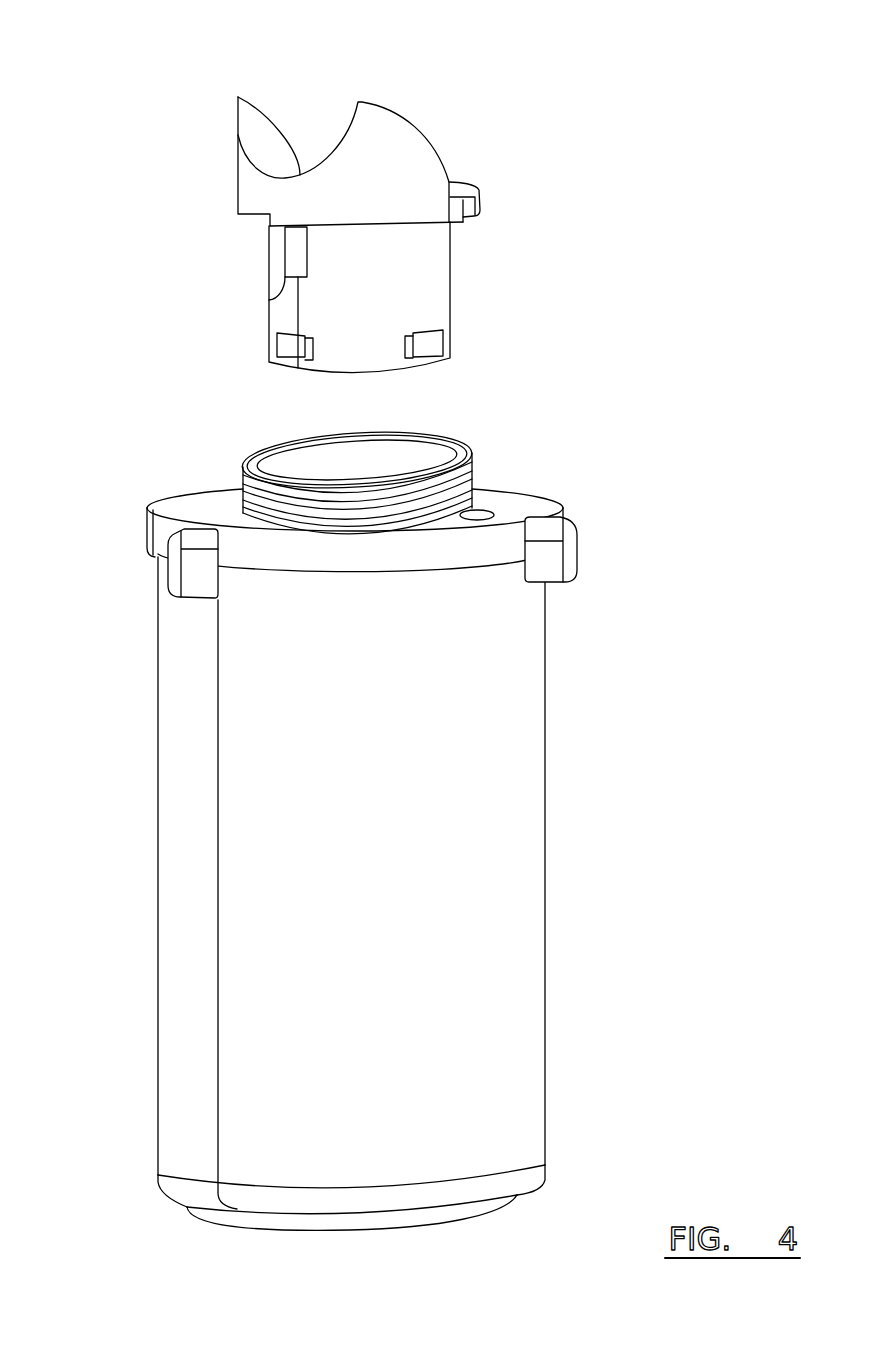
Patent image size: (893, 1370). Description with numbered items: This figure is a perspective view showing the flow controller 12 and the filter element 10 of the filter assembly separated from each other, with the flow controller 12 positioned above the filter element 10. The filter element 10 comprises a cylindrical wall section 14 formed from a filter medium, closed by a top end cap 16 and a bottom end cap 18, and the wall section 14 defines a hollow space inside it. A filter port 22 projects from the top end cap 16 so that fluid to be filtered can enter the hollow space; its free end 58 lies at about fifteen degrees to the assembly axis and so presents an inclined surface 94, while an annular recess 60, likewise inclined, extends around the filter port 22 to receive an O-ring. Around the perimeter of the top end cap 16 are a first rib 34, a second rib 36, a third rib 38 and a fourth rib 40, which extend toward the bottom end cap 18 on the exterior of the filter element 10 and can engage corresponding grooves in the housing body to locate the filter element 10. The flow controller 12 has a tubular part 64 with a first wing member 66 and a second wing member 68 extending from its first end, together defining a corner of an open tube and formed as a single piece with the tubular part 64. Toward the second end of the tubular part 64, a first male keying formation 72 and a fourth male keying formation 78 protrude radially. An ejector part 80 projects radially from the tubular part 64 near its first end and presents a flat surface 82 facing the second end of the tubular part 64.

The filter element 10 is at (363, 842).
The flow controller 12 is at (353, 192).
The cylindrical wall section 14 is at (512, 985).
The top end cap 16 is at (537, 503).
The bottom end cap 18 is at (440, 1223).
The filter port 22 is at (478, 460).
The first rib 34 is at (177, 582).
The second rib 36 is at (153, 502).
The third rib 38 is at (527, 488).
The fourth rib 40 is at (570, 557).
The free end of the filter port 58 is at (263, 448).
The annular recess 60 is at (242, 484).
The tubular part 64 is at (402, 282).
The first wing member 66 is at (257, 135).
The second wing member 68 is at (400, 142).
The first male keying formation 72 is at (287, 342).
The fourth male keying formation 78 is at (430, 343).
The ejector part 80 is at (273, 248).
The flat surface 82 is at (277, 297).
The inclined surface 94 is at (462, 445).